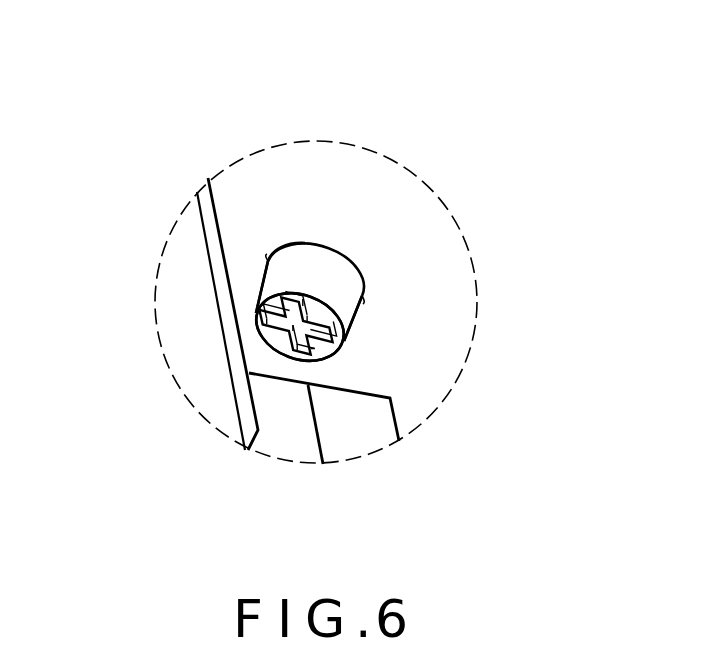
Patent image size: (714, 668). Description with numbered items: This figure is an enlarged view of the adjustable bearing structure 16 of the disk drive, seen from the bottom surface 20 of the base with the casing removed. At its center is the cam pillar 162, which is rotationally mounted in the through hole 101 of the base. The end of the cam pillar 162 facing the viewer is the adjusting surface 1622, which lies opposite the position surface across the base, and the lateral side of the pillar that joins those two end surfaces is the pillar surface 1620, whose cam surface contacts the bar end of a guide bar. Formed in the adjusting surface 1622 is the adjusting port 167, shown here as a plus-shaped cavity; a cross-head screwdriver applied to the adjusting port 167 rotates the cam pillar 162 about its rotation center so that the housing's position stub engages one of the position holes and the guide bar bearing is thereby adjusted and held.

The adjustable bearing structure 16 is at (405, 168).
The bottom surface 20 is at (444, 350).
The cam pillar 162 is at (325, 267).
The pillar surface 1620 is at (295, 273).
The through hole 101 is at (366, 303).
The adjusting surface 1622 is at (323, 357).
The adjusting port 167 is at (280, 338).